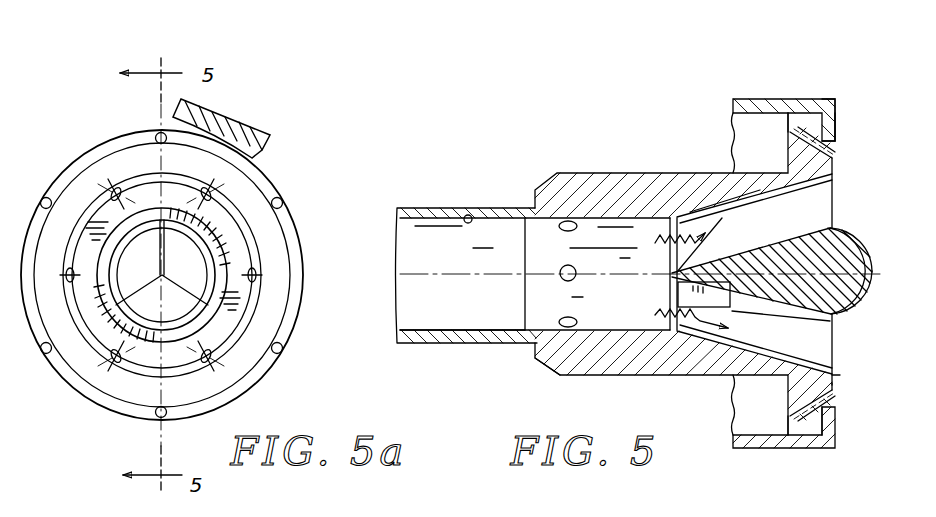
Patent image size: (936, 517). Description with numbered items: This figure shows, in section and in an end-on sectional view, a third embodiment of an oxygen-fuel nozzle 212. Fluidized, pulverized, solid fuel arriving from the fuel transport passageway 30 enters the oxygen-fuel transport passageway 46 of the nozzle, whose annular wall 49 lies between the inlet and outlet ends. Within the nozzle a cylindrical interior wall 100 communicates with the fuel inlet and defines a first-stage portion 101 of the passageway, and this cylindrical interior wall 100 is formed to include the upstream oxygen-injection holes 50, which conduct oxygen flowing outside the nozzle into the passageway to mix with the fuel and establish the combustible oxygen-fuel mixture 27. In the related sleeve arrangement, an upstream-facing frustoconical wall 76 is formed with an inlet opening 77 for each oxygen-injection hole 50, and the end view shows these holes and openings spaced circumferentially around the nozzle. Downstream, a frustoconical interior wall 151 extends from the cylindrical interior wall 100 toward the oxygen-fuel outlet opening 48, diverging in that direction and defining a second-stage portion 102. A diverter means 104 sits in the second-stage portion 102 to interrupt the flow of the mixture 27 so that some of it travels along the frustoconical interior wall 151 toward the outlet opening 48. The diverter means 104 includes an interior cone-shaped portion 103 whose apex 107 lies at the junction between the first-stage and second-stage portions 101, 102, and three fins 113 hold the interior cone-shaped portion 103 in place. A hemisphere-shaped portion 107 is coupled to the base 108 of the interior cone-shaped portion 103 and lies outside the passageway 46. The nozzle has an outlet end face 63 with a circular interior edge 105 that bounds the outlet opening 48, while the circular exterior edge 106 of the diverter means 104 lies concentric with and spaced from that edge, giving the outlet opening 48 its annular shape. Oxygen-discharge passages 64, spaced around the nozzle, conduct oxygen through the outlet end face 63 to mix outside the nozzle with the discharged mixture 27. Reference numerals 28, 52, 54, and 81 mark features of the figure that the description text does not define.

In FIG. 5, the oxygen-fuel mixture 27 is at (668, 232).
In FIG. 5, the tube 28 is at (434, 206).
In FIG. 5, the fuel transport passageway 30 is at (468, 214).
In FIG. 5, the oxygen-fuel transport passageway 46 is at (545, 307).
In FIG. 5, the oxygen-fuel outlet opening 48 is at (817, 208).
In FIG. 5, the annular wall 49 is at (573, 193).
In FIG. 5, the upstream oxygen-injection holes 50 is at (558, 282).
In FIG. 5A, the housing block 52 is at (252, 118).
In FIG. 5, the housing block 52 is at (760, 96).
In FIG. 5, the flange 54 is at (824, 99).
In FIG. 5, the outlet end face 63 is at (833, 405).
In FIG. 5, the oxygen-discharge passages 64 is at (838, 156).
In FIG. 5A, the frustoconical wall 76 is at (253, 240).
In FIG. 5, the frustoconical wall 76 is at (549, 368).
In FIG. 5A, the inlet opening 77 is at (262, 266).
In FIG. 5, the shoulder 81 is at (836, 112).
In FIG. 5, the cylindrical interior wall 100 is at (590, 222).
In FIG. 5, the first-stage portion 101 is at (543, 240).
In FIG. 5, the second-stage portion 102 is at (758, 207).
In FIG. 5, the interior cone-shaped portion 103 is at (808, 258).
In FIG. 5, the diverter means 104 is at (848, 335).
In FIG. 5, the circular interior edge 105 is at (836, 372).
In FIG. 5, the circular exterior edge 106 is at (827, 320).
In FIG. 5, the hemisphere-shaped portion 107 is at (862, 258).
In FIG. 5, the base 108 is at (868, 300).
In FIG. 5, the fins 113 is at (706, 228).
In FIG. 5, the frustoconical interior wall 151 is at (775, 205).
In FIG. 5, the oxygen-fuel nozzle 212 is at (575, 170).